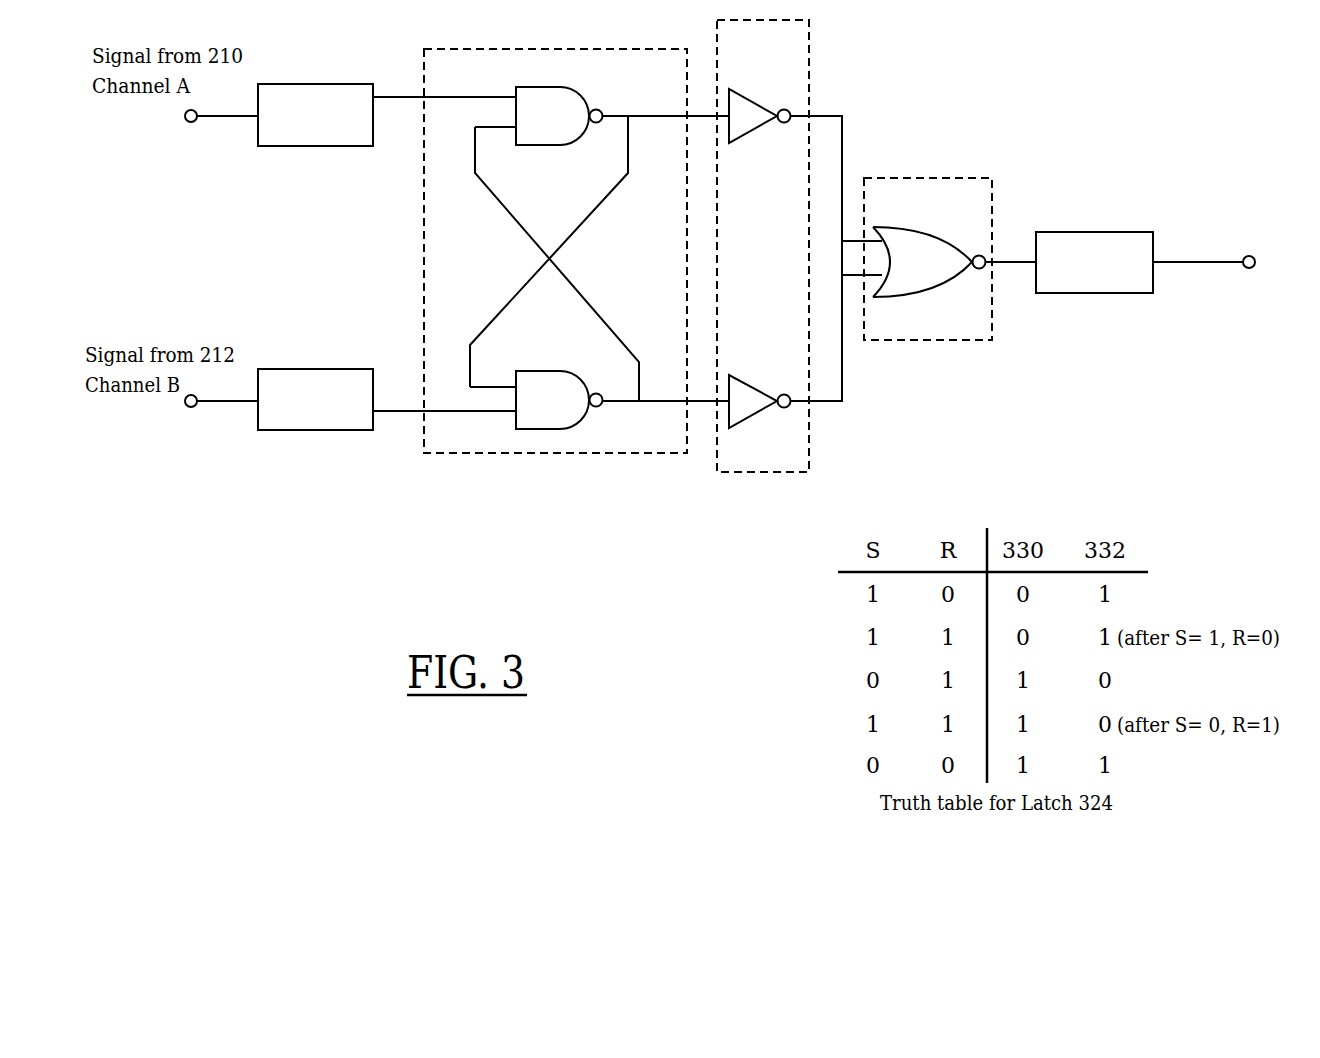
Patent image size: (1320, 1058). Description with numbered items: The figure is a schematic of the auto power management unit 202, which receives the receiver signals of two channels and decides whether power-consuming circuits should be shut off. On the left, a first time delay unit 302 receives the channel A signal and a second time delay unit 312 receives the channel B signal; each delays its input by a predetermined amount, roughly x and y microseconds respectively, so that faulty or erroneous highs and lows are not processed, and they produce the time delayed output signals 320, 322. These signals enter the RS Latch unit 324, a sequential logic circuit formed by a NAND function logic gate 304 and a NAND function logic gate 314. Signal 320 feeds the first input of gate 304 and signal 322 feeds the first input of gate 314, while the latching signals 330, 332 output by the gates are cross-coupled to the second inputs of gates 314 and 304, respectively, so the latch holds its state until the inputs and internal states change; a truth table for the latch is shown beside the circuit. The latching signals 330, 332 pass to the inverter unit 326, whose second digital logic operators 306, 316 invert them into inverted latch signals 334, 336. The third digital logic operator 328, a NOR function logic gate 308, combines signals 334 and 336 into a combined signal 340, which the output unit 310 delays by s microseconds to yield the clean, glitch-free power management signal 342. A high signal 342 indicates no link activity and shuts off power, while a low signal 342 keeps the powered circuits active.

The auto power management unit 202 is at (609, 551).
The first time delay unit 302 is at (273, 133).
The NAND function logic gate 304 is at (539, 116).
The second digital logic operator 306 is at (745, 97).
The NOR function logic gate 308 is at (929, 262).
The output unit 310 is at (1076, 232).
The second time delay unit 312 is at (270, 370).
The NAND function logic gate 314 is at (536, 400).
The second digital logic operator 316 is at (742, 388).
The time delayed output signal 320 is at (400, 97).
The time delayed output signal 322 is at (397, 411).
The RS Latch unit 324 is at (555, 298).
The inverter unit 326 is at (763, 306).
The third digital logic operator 328 is at (928, 218).
The latching signal 330 is at (705, 116).
The latching signal 332 is at (703, 403).
The inverted latch signal 334 is at (842, 135).
The inverted latch signal 336 is at (842, 380).
The combined signal 340 is at (1014, 262).
The power management signal 342 is at (1195, 262).